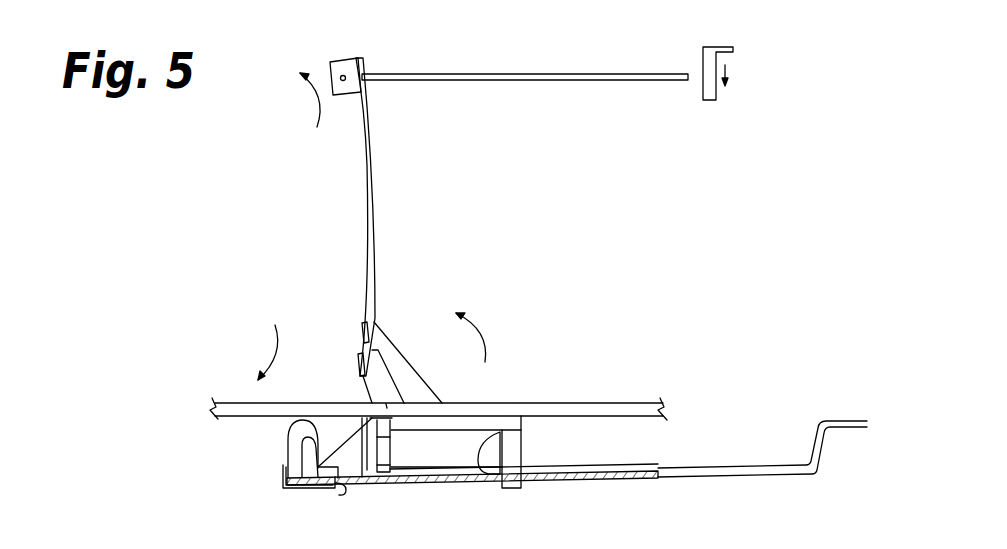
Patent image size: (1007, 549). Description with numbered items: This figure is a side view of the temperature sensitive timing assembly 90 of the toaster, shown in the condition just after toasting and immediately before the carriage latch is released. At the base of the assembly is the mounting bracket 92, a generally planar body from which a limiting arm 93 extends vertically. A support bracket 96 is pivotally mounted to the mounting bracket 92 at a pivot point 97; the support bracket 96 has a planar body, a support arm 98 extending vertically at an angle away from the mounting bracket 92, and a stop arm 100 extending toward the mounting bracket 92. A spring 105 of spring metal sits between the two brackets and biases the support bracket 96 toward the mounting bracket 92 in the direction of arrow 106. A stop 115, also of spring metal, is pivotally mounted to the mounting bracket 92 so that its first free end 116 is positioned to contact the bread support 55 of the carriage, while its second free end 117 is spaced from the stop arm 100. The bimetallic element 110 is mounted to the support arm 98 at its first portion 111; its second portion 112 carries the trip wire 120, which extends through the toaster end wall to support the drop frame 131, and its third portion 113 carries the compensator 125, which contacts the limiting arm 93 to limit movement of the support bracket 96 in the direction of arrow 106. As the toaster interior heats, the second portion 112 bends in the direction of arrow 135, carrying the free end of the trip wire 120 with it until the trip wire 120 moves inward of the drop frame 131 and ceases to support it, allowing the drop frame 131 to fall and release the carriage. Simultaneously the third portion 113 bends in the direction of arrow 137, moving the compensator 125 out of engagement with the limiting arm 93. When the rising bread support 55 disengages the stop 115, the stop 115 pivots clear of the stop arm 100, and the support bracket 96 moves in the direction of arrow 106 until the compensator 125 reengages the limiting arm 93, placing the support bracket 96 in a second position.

The timing assembly 90 is at (285, 236).
The trip wire 120 is at (500, 73).
The drop frame 131 is at (711, 50).
The arrow 135 is at (287, 102).
The bimetallic element 110 is at (373, 187).
The second portion 112 is at (367, 166).
The first portion 111 is at (363, 335).
The third portion 113 is at (361, 364).
The support arm 98 is at (402, 376).
The compensator 125 is at (368, 390).
The arrow 106 is at (486, 335).
The arrow 137 is at (250, 352).
The bread support 55 is at (574, 410).
The support bracket 96 is at (478, 427).
The first free end 116 is at (657, 421).
The spring 105 is at (295, 441).
The stop arm 100 is at (527, 485).
The pivot point 97 is at (344, 487).
The limiting arm 93 is at (397, 487).
The second free end 117 is at (478, 446).
The stop 115 is at (493, 477).
The mounting bracket 92 is at (512, 488).